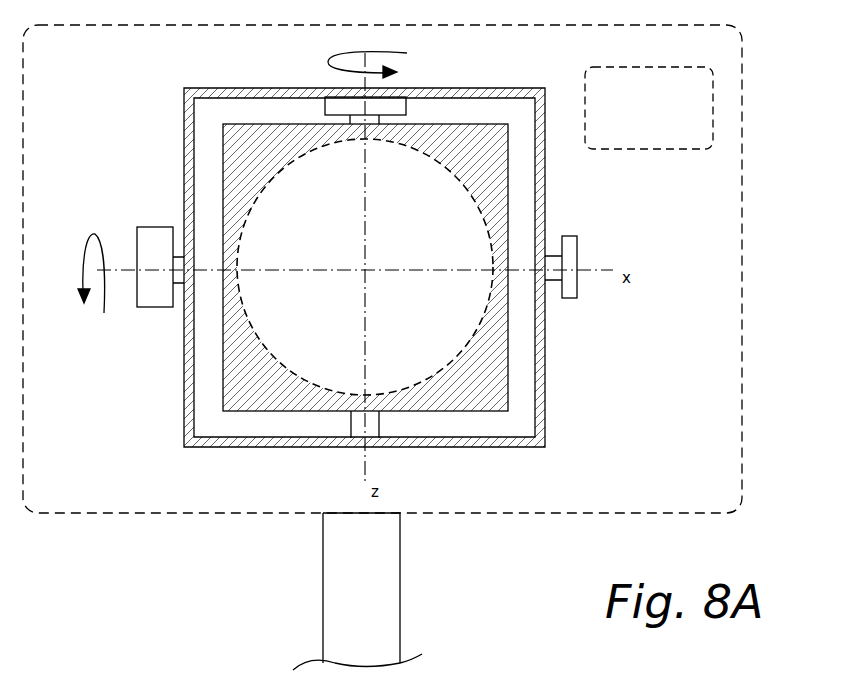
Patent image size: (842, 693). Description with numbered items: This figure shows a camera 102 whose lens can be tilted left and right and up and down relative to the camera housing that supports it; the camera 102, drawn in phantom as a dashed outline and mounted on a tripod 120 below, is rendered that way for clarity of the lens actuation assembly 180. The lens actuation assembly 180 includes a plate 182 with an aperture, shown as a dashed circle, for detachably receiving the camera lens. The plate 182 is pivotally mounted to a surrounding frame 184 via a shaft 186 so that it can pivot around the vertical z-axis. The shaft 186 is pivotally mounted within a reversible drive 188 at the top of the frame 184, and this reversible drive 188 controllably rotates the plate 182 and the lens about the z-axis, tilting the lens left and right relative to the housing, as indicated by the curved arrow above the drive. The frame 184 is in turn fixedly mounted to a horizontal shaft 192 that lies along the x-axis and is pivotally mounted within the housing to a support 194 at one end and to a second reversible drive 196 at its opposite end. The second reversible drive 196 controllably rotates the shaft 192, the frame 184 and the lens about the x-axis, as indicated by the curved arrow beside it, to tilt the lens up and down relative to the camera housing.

The camera 102 is at (730, 188).
The tripod 120 is at (392, 580).
The lens actuation assembly 180 is at (128, 137).
The plate 182 is at (497, 393).
The frame 184 is at (259, 90).
The shaft 186 is at (357, 427).
The reversible drive 188 is at (397, 107).
The shaft 192 is at (552, 260).
The support 194 is at (568, 242).
The second reversible drive 196 is at (157, 307).